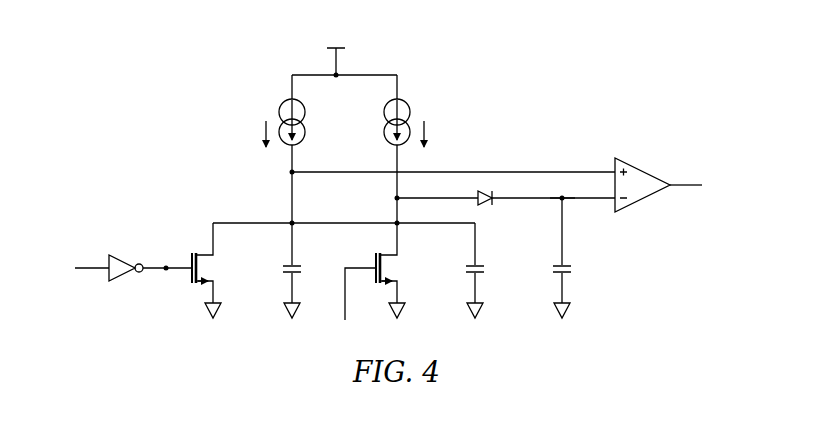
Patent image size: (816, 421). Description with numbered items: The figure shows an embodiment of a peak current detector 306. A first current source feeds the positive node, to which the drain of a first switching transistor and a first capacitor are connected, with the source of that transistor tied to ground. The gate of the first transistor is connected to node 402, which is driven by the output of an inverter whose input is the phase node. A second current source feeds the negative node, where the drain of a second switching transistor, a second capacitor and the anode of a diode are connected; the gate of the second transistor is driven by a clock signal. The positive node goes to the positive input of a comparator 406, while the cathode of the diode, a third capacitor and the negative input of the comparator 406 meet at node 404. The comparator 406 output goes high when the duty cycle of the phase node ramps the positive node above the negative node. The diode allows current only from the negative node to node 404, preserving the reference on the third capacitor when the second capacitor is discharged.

The peak current detector 306 is at (177, 115).
The node 402 is at (165, 272).
The node 404 is at (566, 202).
The comparator 406 is at (642, 170).